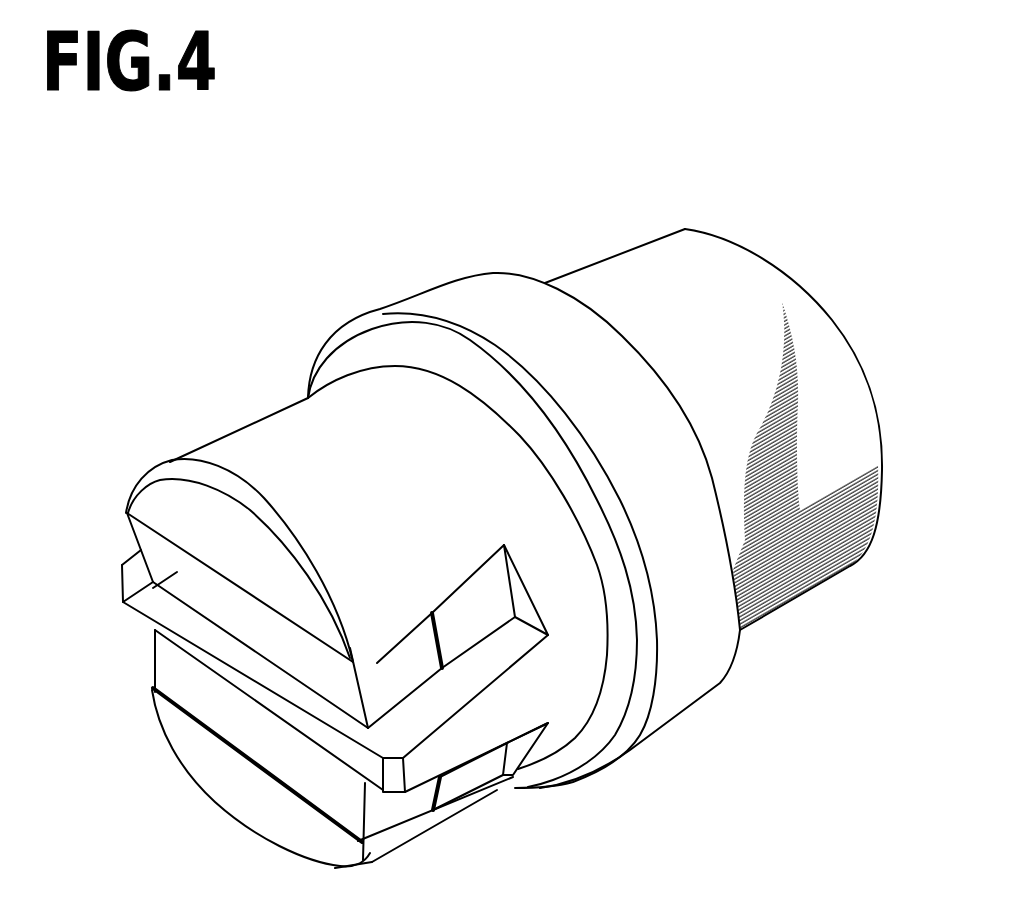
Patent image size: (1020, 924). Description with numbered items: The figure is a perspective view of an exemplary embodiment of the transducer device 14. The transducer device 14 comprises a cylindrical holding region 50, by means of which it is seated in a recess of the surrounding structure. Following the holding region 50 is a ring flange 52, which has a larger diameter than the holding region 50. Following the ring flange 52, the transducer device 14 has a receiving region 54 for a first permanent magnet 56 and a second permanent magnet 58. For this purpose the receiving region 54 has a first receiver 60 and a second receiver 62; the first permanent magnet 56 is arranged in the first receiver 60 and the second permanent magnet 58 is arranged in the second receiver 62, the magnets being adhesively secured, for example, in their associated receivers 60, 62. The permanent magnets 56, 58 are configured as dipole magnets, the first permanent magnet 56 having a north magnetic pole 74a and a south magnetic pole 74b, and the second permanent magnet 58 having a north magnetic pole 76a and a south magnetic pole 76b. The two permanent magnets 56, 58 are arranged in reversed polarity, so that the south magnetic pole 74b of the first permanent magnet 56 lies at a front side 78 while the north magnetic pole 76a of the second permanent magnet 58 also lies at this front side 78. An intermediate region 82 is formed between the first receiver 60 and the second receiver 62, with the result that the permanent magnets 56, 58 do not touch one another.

The transducer device 14 is at (502, 232).
The cylindrical holding region 50 is at (627, 268).
The ring flange 52 is at (460, 302).
The receiving region 54 is at (298, 428).
The first permanent magnet 56 is at (153, 590).
The second permanent magnet 58 is at (165, 722).
The first receiver 60 is at (523, 630).
The second receiver 62 is at (517, 777).
The north magnetic pole 74a is at (465, 638).
The south magnetic pole 74b is at (157, 542).
The north magnetic pole 76a is at (185, 666).
The south magnetic pole 76b is at (443, 797).
The front side 78 is at (202, 512).
The intermediate region 82 is at (330, 745).